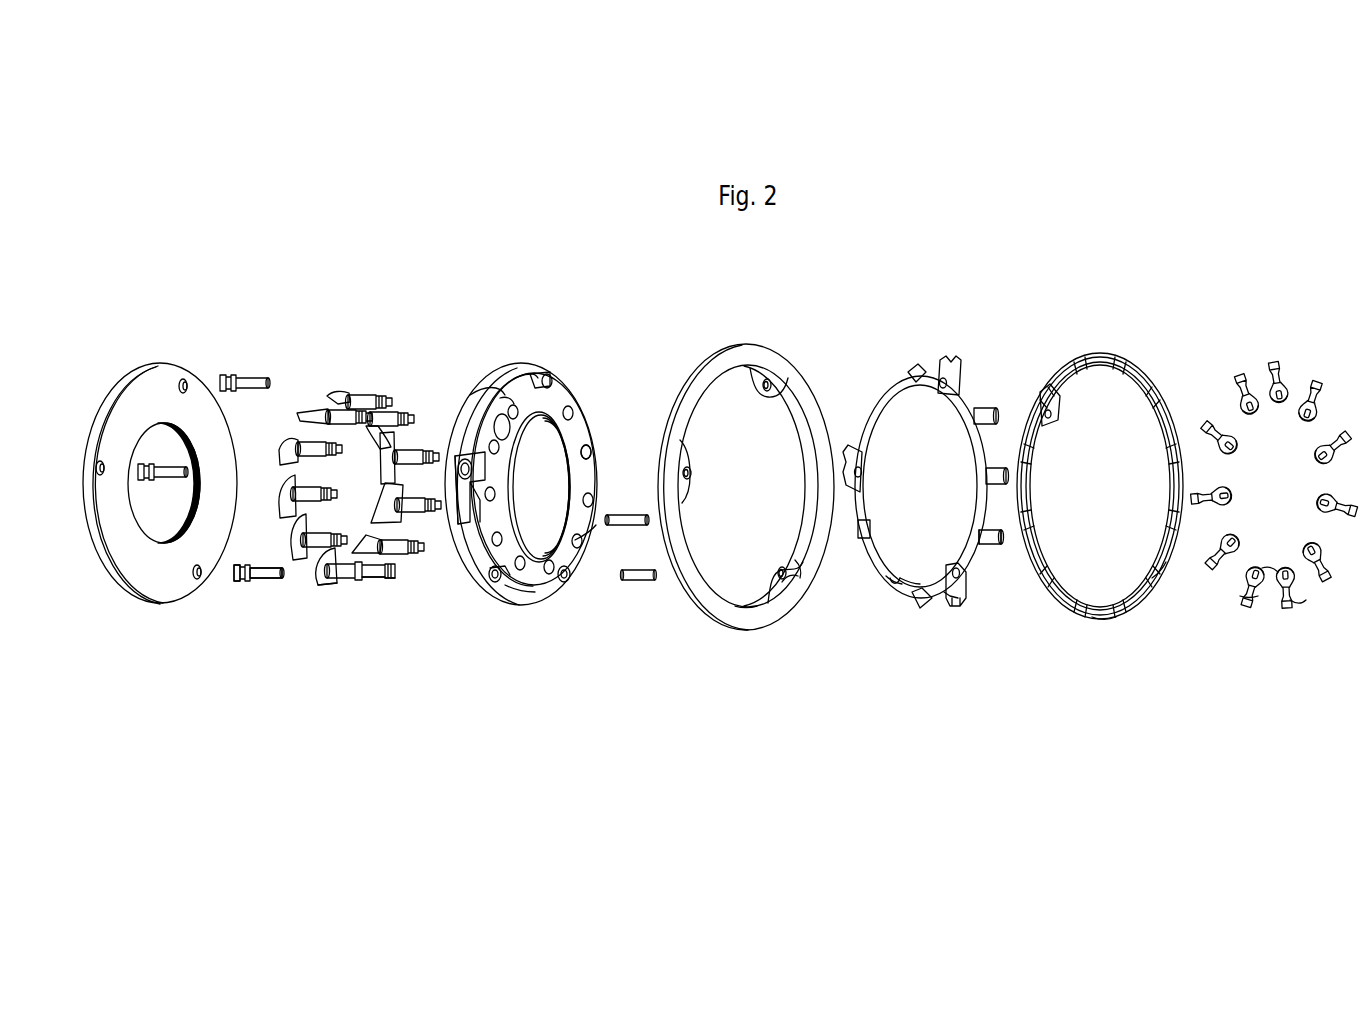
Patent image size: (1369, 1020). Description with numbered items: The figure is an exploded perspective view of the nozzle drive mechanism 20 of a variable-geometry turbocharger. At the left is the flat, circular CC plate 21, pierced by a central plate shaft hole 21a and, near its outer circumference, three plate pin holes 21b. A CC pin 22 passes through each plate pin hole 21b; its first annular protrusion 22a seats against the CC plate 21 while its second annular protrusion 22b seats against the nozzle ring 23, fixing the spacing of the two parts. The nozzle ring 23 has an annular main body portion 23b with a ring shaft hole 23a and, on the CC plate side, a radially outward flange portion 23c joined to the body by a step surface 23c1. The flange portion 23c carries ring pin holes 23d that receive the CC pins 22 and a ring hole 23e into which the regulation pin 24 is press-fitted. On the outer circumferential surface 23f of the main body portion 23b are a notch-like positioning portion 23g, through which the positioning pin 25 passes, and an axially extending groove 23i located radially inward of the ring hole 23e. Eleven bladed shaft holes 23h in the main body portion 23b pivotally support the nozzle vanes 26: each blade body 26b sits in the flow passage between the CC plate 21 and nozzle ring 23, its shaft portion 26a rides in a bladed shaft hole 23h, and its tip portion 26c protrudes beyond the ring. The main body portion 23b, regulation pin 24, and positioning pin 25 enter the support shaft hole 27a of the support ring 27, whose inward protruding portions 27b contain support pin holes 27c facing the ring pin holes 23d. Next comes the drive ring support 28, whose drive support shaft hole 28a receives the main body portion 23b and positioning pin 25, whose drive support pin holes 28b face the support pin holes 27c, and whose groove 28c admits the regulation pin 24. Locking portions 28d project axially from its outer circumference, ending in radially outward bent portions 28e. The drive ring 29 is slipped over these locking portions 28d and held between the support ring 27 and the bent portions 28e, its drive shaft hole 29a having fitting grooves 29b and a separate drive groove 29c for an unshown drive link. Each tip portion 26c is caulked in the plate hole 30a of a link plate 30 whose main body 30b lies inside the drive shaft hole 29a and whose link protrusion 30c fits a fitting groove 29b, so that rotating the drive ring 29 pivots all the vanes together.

The nozzle drive mechanism 20 is at (68, 253).
The CC plate 21 is at (166, 363).
The plate shaft hole 21a is at (163, 538).
The plate pin hole 21b is at (203, 582).
The CC pin 22 is at (258, 380).
The first annular protrusion 22a is at (237, 588).
The second annular protrusion 22b is at (267, 583).
The nozzle vane 26 is at (355, 390).
The shaft portion 26a is at (374, 583).
The blade body 26b is at (333, 583).
The tip portion 26c is at (407, 575).
The nozzle ring 23 is at (513, 367).
The ring shaft hole 23a is at (584, 546).
The main body portion 23b is at (500, 393).
The flange portion 23c is at (502, 600).
The step surface 23c1 is at (527, 377).
The ring pin hole 23d is at (573, 580).
The ring hole 23e is at (498, 588).
The outer circumferential surface 23f is at (508, 400).
The positioning portion 23g is at (452, 460).
The bladed shaft hole 23h is at (589, 452).
The groove 23i is at (508, 567).
The regulation pin 24 is at (640, 585).
The positioning pin 25 is at (641, 528).
The support ring 27 is at (740, 344).
The support shaft hole 27a is at (746, 607).
The protruding portion 27b is at (798, 567).
The support pin hole 27c is at (788, 584).
The drive ring support 28 is at (893, 383).
The drive support shaft hole 28a is at (910, 585).
The drive support pin hole 28b is at (948, 592).
The groove 28c is at (893, 585).
The locking portion 28d is at (985, 548).
The bent portion 28e is at (1001, 545).
The drive ring 29 is at (1090, 354).
The drive shaft hole 29a is at (1104, 620).
The fitting groove 29b is at (1158, 581).
The drive groove 29c is at (1047, 403).
The link plate 30 is at (1275, 362).
The plate hole 30a is at (1244, 597).
The main body 30b is at (1268, 570).
The link protrusion 30c is at (1298, 603).